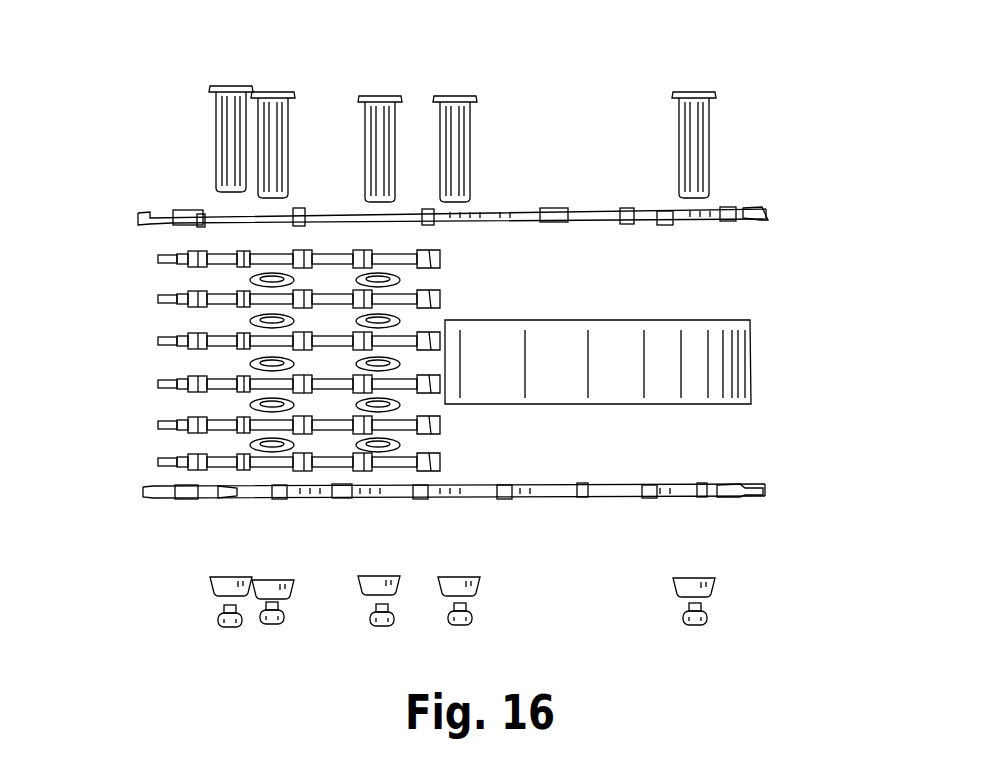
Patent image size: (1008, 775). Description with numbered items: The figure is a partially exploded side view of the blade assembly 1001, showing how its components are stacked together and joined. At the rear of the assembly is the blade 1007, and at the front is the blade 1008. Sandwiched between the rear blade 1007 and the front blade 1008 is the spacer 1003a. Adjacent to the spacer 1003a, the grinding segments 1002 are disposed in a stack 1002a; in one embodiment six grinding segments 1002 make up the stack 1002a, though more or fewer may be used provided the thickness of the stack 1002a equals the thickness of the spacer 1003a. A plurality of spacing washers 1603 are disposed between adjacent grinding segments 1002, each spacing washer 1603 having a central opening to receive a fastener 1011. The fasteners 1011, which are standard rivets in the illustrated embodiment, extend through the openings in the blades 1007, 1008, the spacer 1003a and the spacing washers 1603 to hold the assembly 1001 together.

The blade assembly 1001 is at (812, 160).
The fasteners 1011 is at (381, 96).
The blade 1007 is at (176, 210).
The grinding segments 1002 is at (182, 262).
The stack 1002a is at (136, 378).
The spacing washers 1603 is at (403, 281).
The spacer 1003a is at (751, 352).
The blade 1008 is at (178, 498).